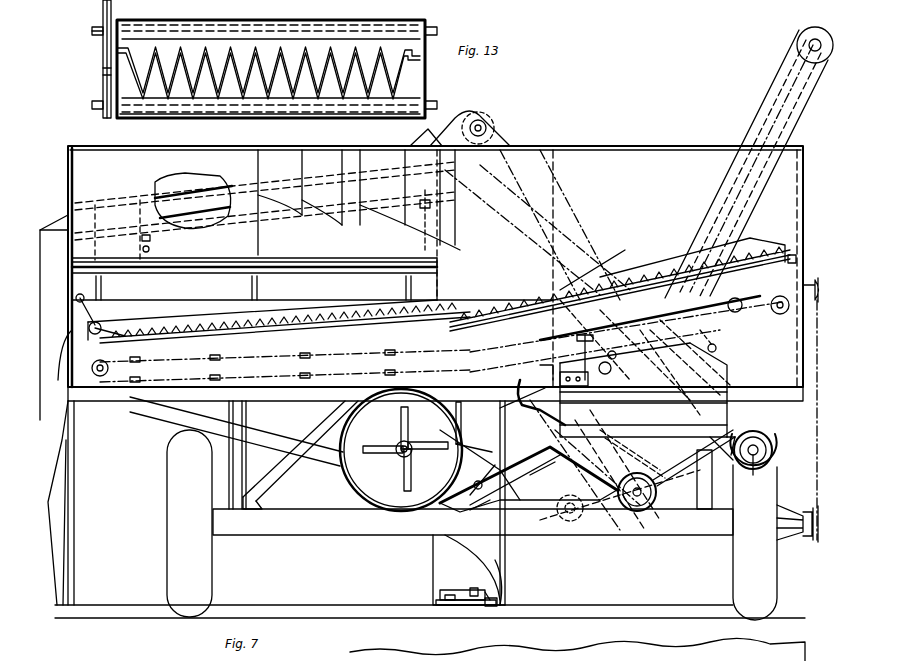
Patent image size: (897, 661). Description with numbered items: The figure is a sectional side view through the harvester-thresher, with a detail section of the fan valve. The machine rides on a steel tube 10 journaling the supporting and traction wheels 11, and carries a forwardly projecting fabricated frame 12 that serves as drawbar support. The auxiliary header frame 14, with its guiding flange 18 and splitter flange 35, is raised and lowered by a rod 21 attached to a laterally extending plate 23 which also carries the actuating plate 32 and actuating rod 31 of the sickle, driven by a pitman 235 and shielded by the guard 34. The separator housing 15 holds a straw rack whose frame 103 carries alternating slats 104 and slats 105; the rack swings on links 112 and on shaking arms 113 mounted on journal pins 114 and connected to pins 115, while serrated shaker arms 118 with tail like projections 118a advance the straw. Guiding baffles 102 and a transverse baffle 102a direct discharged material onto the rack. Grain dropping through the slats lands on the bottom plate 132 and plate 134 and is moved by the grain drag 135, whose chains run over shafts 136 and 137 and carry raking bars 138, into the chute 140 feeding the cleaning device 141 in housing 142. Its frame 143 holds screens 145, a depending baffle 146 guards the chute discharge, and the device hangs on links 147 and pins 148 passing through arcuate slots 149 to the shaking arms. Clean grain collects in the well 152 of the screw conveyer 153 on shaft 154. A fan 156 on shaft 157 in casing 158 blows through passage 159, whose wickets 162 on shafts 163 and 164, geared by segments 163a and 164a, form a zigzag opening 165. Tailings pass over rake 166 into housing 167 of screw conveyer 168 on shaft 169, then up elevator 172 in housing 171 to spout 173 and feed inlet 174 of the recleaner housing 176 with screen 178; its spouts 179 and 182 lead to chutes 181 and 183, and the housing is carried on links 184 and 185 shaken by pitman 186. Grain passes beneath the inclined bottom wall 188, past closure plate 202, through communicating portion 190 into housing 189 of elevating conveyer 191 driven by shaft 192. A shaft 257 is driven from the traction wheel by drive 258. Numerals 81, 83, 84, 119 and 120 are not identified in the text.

In FIG. 7, the steel tube 10 is at (348, 538).
In FIG. 7, the supporting and traction wheels 11 is at (168, 492).
In FIG. 7, the fabricated frame 12 is at (712, 492).
In FIG. 7, the auxiliary header frame 14 is at (75, 432).
In FIG. 7, the separator housing 15 is at (645, 147).
In FIG. 7, the flange 18 is at (62, 460).
In FIG. 7, the rod 21 is at (500, 556).
In FIG. 7, the laterally extending flange or plate 23 is at (498, 605).
In FIG. 7, the actuating rod 31 is at (440, 590).
In FIG. 7, the actuating plate 32 is at (436, 602).
In FIG. 7, the shield or guard 34 is at (500, 585).
In FIG. 7, the flange 35 is at (55, 560).
In FIG. 7, the bar assembly 81 is at (254, 279).
In FIG. 7, the bar support 83 is at (102, 286).
In FIG. 7, the bar support 84 is at (250, 286).
In FIG. 7, the guiding baffles 102 is at (225, 165).
In FIG. 7, the transversely extending baffle 102a is at (102, 309).
In FIG. 7, the frame 103 is at (188, 312).
In FIG. 7, the slats 104 is at (218, 330).
In FIG. 7, the slats 105 is at (262, 331).
In FIG. 7, the links 112 is at (99, 334).
In FIG. 7, the shaking arms or levers 113 is at (606, 326).
In FIG. 7, the journal pins 114 is at (596, 357).
In FIG. 7, the pins 115 is at (595, 265).
In FIG. 7, the shaker arms 118 is at (530, 300).
In FIG. 7, the tail like projections 118a is at (698, 254).
In FIG. 7, the partition 119 is at (455, 300).
In FIG. 7, the conveyor belt 120 is at (380, 328).
In FIG. 7, the bottom plate 132 is at (305, 388).
In FIG. 7, the plate 134 is at (718, 308).
In FIG. 7, the grain drag or rake 135 is at (441, 342).
In FIG. 7, the driving shaft 136 is at (782, 297).
In FIG. 7, the shaft 137 is at (108, 369).
In FIG. 7, the transverse raking bars 138 is at (285, 351).
In FIG. 7, the discharge pan or chute 140 is at (548, 378).
In FIG. 7, the cleaning device 141 is at (636, 357).
In FIG. 7, the housing 142 is at (694, 458).
In FIG. 7, the frame 143 is at (727, 362).
In FIG. 7, the screens 145 is at (671, 412).
In FIG. 7, the depending baffle 146 is at (604, 363).
In FIG. 7, the links 147 is at (716, 341).
In FIG. 7, the pins 148 is at (643, 390).
In FIG. 7, the arcuate slots 149 is at (587, 380).
In FIG. 7, the well 152 is at (656, 498).
In FIG. 7, the screw conveyer 153 is at (681, 488).
In FIG. 7, the shaft 154 is at (640, 512).
In FIG. 7, the fan 156 is at (396, 456).
In FIG. 7, the shaft 157 is at (400, 445).
In FIG. 7, the casing 158 is at (352, 480).
In FIG. 13, the conduit or passage 159 is at (226, 116).
In FIG. 7, the conduit or passage 159 is at (520, 385).
In FIG. 13, the wickets or leaves 162 is at (370, 50).
In FIG. 7, the wickets or leaves 162 is at (480, 470).
In FIG. 13, the operating shaft or spindle 163 is at (436, 31).
In FIG. 7, the operating shaft or spindle 163 is at (458, 440).
In FIG. 13, the gear segment 163a is at (100, 52).
In FIG. 13, the operating shaft or spindle 164 is at (92, 105).
In FIG. 7, the operating shaft or spindle 164 is at (474, 483).
In FIG. 13, the gear segment 164a is at (100, 84).
In FIG. 13, the opening of zigzag formation 165 is at (318, 60).
In FIG. 7, the rake 166 is at (758, 390).
In FIG. 7, the housing 167 is at (770, 462).
In FIG. 7, the screw conveyer 168 is at (772, 448).
In FIG. 7, the operating shaft 169 is at (753, 473).
In FIG. 7, the housing 171 is at (565, 212).
In FIG. 7, the bucket elevator or conveyer 172 is at (495, 132).
In FIG. 7, the discharge spout 173 is at (452, 126).
In FIG. 7, the feed inlet 174 is at (420, 136).
In FIG. 7, the housing 176 is at (275, 205).
In FIG. 7, the screen 178 is at (193, 201).
In FIG. 7, the discharge spout 179 is at (58, 228).
In FIG. 7, the chute 181 is at (70, 345).
In FIG. 7, the discharge spout 182 is at (125, 212).
In FIG. 7, the chute 183 is at (160, 237).
In FIG. 7, the link 184 is at (160, 251).
In FIG. 7, the link 185 is at (420, 225).
In FIG. 7, the pitman 186 is at (500, 195).
In FIG. 7, the inclined bottom wall 188 is at (600, 447).
In FIG. 7, the housing 189 is at (778, 80).
In FIG. 7, the communicating portion 190 is at (528, 450).
In FIG. 7, the elevating conveyer 191 is at (760, 125).
In FIG. 7, the driving shaft 192 is at (568, 538).
In FIG. 7, the valve or closure plate 202 is at (634, 454).
In FIG. 7, the pitman 235 is at (475, 588).
In FIG. 7, the shaft 257 is at (817, 408).
In FIG. 7, the drive 258 is at (797, 512).